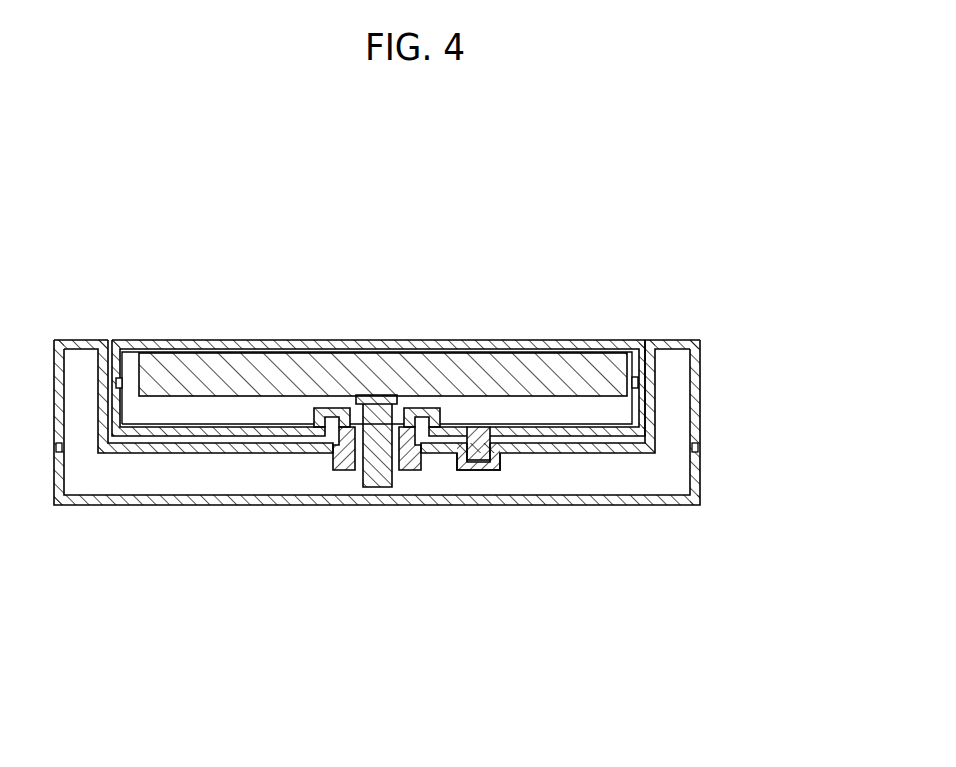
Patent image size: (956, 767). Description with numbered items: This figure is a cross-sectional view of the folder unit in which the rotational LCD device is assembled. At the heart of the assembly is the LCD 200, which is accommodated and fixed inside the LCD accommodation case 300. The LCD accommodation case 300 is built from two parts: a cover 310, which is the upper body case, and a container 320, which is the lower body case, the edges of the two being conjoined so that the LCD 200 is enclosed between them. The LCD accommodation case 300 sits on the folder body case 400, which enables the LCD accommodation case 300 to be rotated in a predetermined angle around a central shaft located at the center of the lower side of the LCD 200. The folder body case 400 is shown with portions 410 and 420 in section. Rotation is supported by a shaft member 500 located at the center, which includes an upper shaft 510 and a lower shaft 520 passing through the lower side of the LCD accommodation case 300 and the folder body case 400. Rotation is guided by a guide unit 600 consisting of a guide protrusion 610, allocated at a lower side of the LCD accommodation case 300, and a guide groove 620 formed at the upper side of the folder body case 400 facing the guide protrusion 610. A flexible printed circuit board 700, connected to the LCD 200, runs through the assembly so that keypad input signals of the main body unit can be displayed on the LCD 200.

The LCD 200 is at (392, 362).
The LCD accommodation case 300 is at (464, 341).
The cover 310 is at (637, 362).
The container 320 is at (635, 402).
The folder body case 400 is at (462, 422).
The upper frame member 410 is at (698, 432).
The lower tray member 420 is at (698, 467).
The shaft member 500 is at (363, 526).
The upper shaft 510 is at (318, 428).
The lower shaft 520 is at (348, 470).
The guide unit 600 is at (540, 505).
The guide protrusion 610 is at (481, 462).
The guide groove 620 is at (478, 471).
The printed circuit board 700 is at (374, 487).